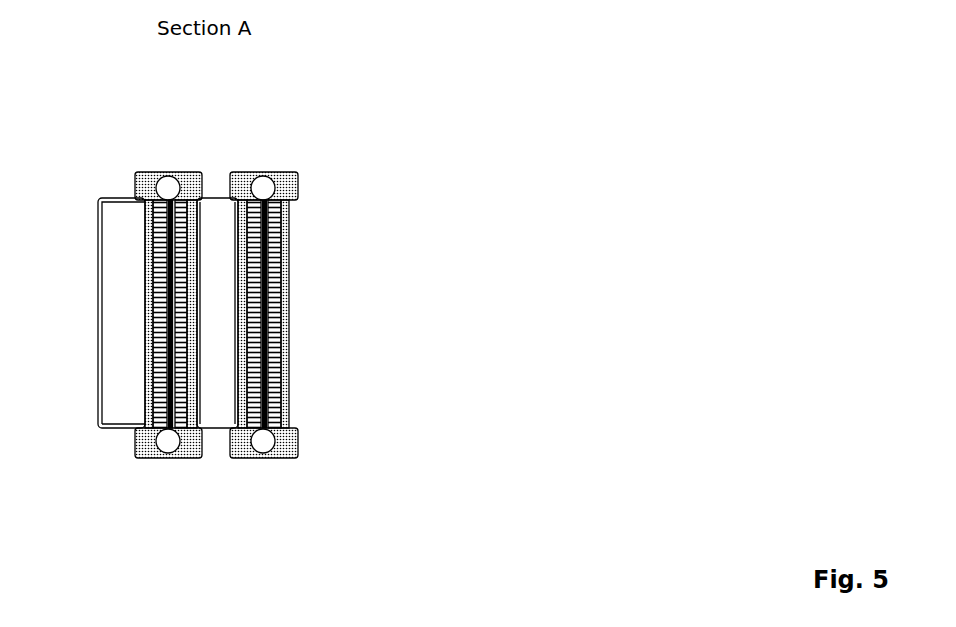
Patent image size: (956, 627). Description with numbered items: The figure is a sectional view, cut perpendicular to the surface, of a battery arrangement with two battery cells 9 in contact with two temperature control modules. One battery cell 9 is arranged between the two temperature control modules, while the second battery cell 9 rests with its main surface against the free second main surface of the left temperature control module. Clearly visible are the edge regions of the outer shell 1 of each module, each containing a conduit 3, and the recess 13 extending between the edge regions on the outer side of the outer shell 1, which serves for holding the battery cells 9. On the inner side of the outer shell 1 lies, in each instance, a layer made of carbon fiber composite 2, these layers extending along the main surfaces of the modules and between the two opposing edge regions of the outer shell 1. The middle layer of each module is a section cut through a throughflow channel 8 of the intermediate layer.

The outer shell 1 is at (288, 270).
The layer made of carbon fiber composite 2 is at (273, 328).
The conduit 3 is at (263, 188).
The throughflow channel 8 is at (267, 387).
The battery cell 9 is at (218, 235).
The recess 13 is at (293, 207).